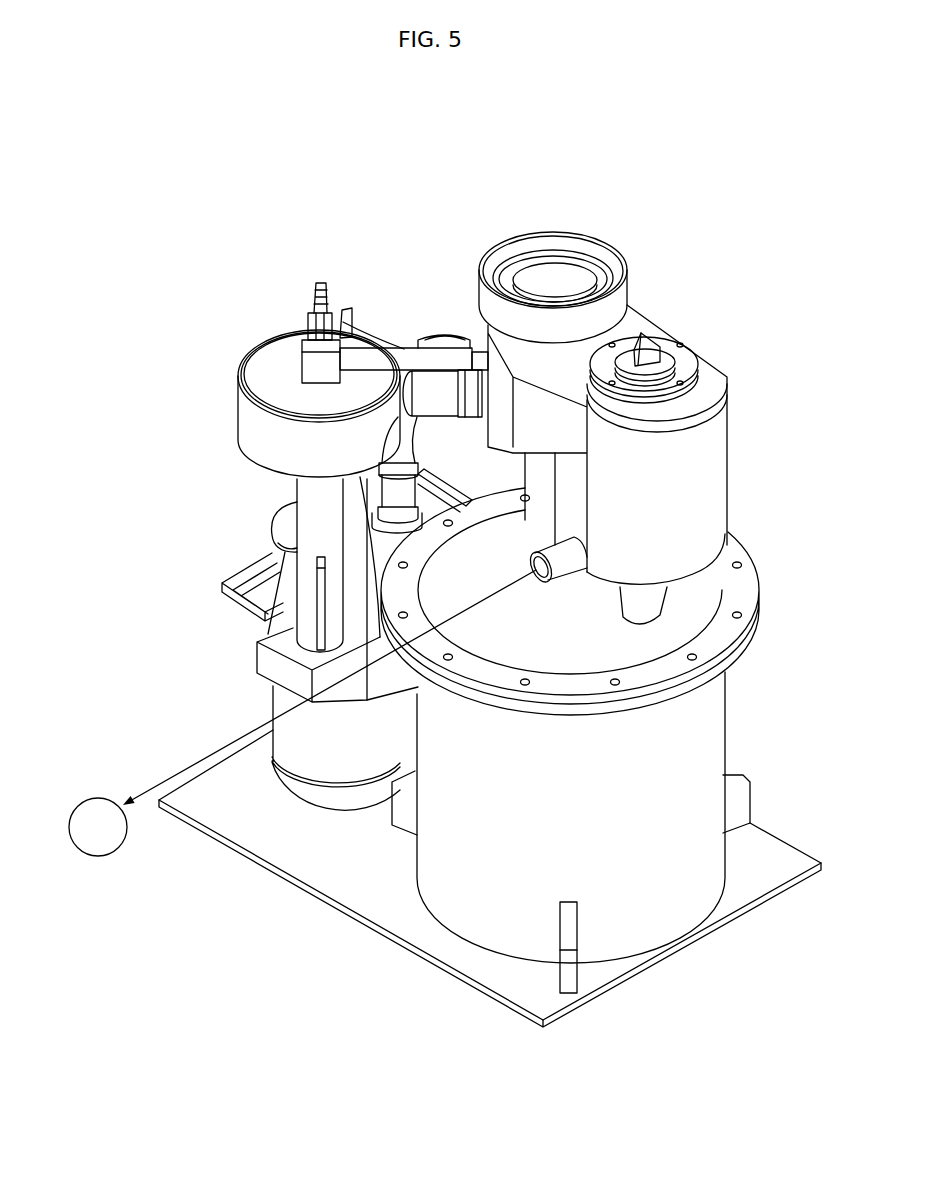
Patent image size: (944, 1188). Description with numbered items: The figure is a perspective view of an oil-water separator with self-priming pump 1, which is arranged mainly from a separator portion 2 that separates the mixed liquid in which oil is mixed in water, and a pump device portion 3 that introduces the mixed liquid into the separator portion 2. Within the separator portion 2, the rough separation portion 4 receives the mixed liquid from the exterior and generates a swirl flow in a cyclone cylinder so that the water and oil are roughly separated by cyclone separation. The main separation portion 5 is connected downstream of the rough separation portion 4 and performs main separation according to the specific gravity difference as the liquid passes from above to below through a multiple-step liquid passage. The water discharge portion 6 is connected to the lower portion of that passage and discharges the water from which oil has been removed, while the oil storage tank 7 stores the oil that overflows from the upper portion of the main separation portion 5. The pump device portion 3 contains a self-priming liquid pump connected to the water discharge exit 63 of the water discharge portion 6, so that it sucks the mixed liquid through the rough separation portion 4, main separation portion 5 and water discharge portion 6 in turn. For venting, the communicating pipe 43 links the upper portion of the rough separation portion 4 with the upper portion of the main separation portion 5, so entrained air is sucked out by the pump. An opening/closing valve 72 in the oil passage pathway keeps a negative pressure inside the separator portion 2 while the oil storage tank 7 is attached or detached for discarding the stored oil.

The oil-water separator with self-priming pump 1 is at (770, 181).
The separator portion 2 is at (265, 244).
The pump device portion 3 is at (71, 799).
The rough separation portion 4 is at (250, 421).
The main separation portion 5 is at (705, 728).
The water discharge portion 6 is at (708, 455).
The oil storage tank 7 is at (287, 700).
The communicating pipe 43 is at (403, 350).
The water discharge exit 63 is at (557, 556).
The opening/closing valve 72 is at (443, 336).